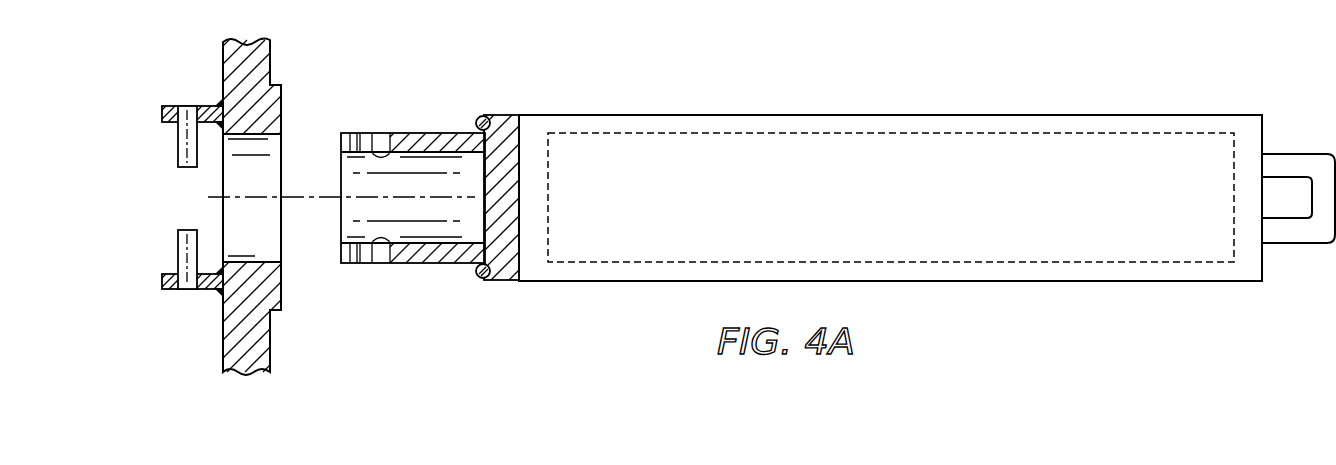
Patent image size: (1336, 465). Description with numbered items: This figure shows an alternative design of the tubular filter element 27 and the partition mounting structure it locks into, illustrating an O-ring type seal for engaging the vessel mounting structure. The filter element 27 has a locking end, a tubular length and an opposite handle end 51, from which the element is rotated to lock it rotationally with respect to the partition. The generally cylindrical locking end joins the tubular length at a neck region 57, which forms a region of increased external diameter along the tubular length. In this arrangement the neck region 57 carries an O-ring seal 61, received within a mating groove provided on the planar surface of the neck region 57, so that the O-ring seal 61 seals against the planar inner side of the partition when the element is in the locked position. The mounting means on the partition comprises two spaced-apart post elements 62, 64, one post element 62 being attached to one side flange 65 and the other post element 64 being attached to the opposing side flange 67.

The tubular filter element 27 is at (1062, 106).
The handle end 51 is at (1292, 144).
The neck region 57 is at (482, 160).
The O-ring seal 61 is at (478, 278).
The post element 62 is at (178, 150).
The post element 64 is at (178, 248).
The side flange 65 is at (162, 112).
The side flange 67 is at (162, 285).